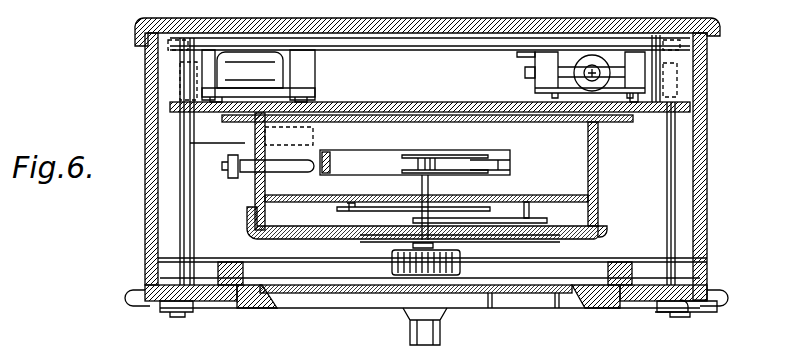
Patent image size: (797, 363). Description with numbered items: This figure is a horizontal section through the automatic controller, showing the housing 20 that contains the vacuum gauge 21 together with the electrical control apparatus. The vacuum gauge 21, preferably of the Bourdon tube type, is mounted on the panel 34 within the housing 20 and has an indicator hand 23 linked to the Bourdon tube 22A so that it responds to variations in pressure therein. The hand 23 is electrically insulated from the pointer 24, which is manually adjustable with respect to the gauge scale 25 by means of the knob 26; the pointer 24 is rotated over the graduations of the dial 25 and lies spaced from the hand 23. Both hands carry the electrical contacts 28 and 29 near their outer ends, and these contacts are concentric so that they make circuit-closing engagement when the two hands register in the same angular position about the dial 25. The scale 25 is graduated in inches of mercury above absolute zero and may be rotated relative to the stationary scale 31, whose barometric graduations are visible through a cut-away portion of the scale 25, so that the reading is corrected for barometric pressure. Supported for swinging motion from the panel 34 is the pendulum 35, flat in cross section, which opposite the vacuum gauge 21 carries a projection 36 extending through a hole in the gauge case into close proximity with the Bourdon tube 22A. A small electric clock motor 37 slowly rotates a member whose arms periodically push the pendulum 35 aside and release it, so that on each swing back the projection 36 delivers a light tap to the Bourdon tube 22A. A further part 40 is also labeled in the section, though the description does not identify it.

The housing 20 is at (707, 158).
The vacuum gauge 21 is at (252, 200).
The Bourdon tube 22A is at (510, 152).
The indicator hand 23 is at (352, 262).
The pointer 24 is at (507, 223).
The gauge scale 25 is at (557, 242).
The knob 26 is at (397, 276).
The electrical contact 28 is at (527, 202).
The electrical contact 29 is at (387, 211).
The stationary scale 31 is at (557, 192).
The panel 34 is at (707, 113).
The pendulum 35 is at (228, 173).
The projection 36 is at (250, 178).
The electric clock motor 37 is at (220, 143).
The base plate 40 is at (335, 283).